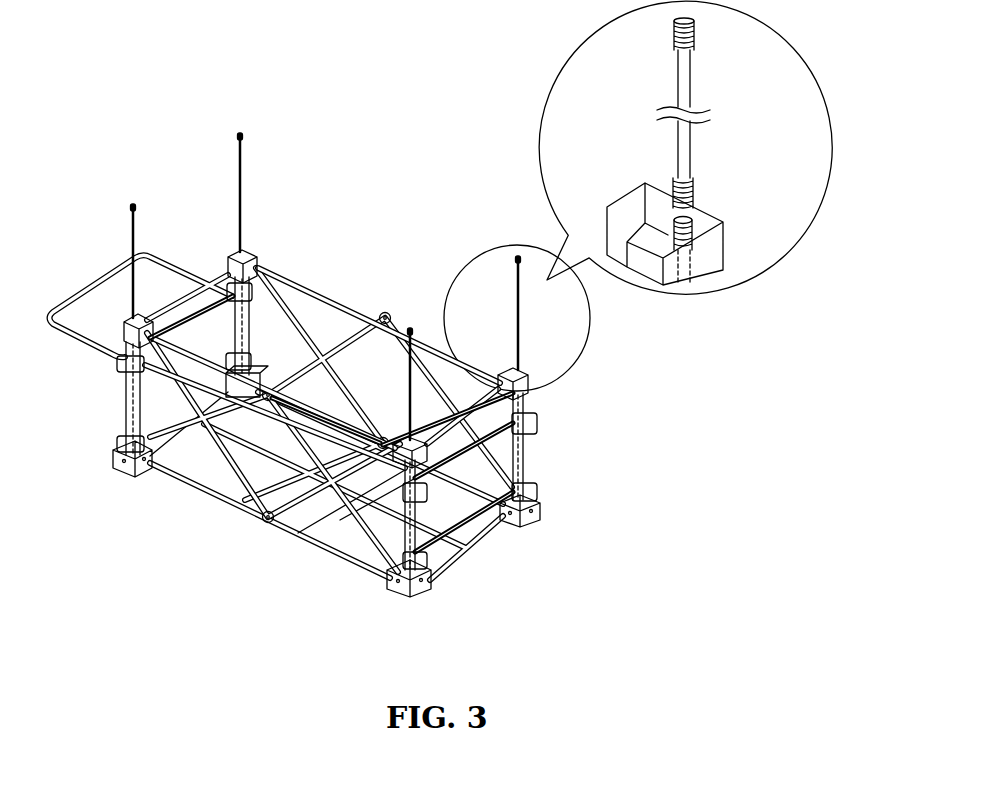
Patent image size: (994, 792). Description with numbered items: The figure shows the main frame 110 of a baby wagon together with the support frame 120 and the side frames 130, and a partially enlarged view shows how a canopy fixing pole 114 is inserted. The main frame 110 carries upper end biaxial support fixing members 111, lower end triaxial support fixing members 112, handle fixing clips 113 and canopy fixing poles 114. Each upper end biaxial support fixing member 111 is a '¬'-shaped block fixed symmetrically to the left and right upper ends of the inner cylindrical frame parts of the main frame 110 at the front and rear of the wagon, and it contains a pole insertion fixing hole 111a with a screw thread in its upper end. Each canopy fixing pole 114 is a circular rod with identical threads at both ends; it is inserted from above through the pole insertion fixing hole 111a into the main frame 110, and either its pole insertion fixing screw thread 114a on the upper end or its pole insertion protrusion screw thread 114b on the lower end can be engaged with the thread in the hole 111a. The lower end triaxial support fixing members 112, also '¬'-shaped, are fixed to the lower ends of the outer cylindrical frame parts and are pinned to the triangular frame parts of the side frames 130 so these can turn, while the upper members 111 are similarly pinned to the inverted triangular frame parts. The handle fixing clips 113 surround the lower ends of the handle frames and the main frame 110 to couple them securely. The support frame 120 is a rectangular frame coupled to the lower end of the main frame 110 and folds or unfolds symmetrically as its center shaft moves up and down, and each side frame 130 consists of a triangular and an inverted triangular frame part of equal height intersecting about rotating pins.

The main frame 110 is at (132, 392).
The upper end biaxial support fixing member 111 is at (138, 318).
The pole insertion fixing hole 111a is at (697, 228).
The lower end triaxial support fixing member 112 is at (133, 463).
The handle fixing clip 113 is at (537, 490).
The canopy fixing pole 114 is at (520, 292).
The pole insertion fixing screw thread 114a is at (694, 32).
The pole insertion protrusion screw thread 114b is at (695, 184).
The support frame 120 is at (307, 540).
The side frame 130 is at (222, 463).